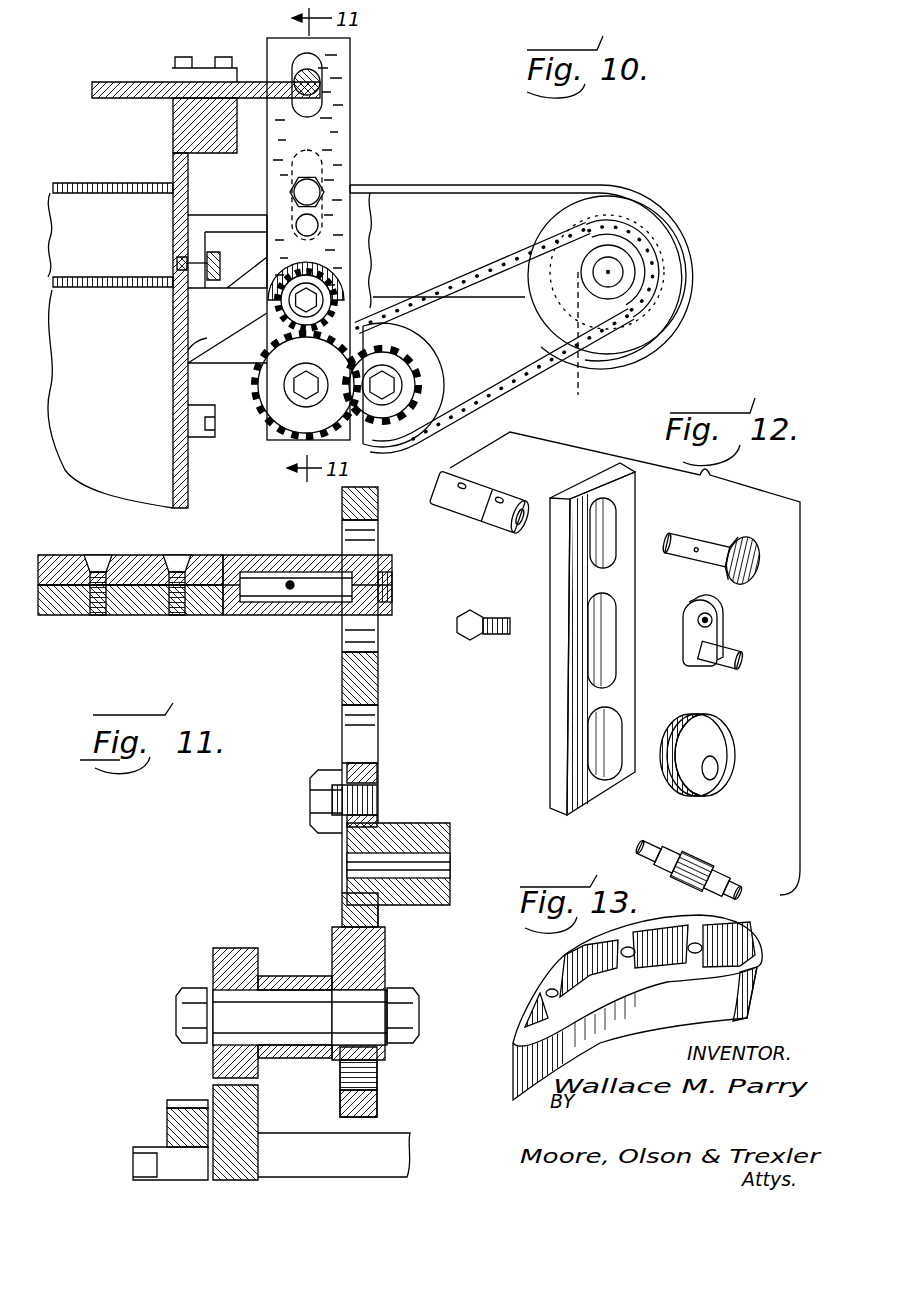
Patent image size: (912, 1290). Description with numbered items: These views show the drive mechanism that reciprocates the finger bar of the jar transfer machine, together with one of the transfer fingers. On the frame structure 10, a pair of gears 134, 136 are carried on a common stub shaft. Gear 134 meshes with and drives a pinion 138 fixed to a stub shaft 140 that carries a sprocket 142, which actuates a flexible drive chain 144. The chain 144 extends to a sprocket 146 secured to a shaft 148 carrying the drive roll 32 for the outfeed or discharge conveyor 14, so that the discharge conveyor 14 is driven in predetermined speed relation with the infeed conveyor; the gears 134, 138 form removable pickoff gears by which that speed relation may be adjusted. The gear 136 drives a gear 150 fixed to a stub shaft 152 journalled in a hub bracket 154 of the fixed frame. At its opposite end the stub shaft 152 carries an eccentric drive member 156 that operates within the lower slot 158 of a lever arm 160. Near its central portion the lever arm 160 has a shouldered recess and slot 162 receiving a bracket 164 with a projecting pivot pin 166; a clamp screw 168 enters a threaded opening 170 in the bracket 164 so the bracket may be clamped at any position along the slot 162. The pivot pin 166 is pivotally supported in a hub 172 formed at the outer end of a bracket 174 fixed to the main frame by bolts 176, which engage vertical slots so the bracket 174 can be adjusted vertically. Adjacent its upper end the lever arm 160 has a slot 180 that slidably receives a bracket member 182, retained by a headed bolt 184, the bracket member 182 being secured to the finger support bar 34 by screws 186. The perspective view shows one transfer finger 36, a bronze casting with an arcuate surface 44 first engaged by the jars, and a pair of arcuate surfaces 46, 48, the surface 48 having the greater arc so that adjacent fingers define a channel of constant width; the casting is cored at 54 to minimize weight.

In FIG. 10, the frame structure 10 is at (173, 397).
In FIG. 10, the outfeed or discharge conveyor 14 is at (507, 185).
In FIG. 10, the roll 32 is at (665, 232).
In FIG. 11, the finger support bar 34 is at (150, 607).
In FIG. 13, the transfer finger 36 is at (652, 1006).
In FIG. 13, the arcuate surface 44 is at (767, 937).
In FIG. 13, the arcuate surface 46 is at (533, 990).
In FIG. 13, the arcuate surface 48 is at (628, 1027).
In FIG. 13, the cored portion 54 is at (600, 972).
In FIG. 10, the gear 134 is at (292, 412).
In FIG. 11, the gear 134 is at (172, 1132).
In FIG. 10, the gear 136 is at (273, 350).
In FIG. 11, the gear 136 is at (245, 1112).
In FIG. 10, the pinion 138 is at (430, 337).
In FIG. 10, the stub shaft 140 is at (384, 388).
In FIG. 10, the sprocket 142 is at (470, 397).
In FIG. 10, the flexible drive chain 144 is at (522, 311).
In FIG. 10, the sprocket 146 is at (598, 340).
In FIG. 10, the shaft 148 is at (615, 272).
In FIG. 10, the gear 150 is at (330, 275).
In FIG. 11, the gear 150 is at (228, 958).
In FIG. 11, the stub shaft 152 is at (215, 1010).
In FIG. 12, the stub shaft 152 is at (693, 857).
In FIG. 10, the hub bracket 154 is at (173, 352).
In FIG. 11, the hub bracket 154 is at (295, 978).
In FIG. 11, the drive member 156 is at (370, 955).
In FIG. 12, the drive member 156 is at (715, 740).
In FIG. 11, the lower slot 158 is at (372, 1072).
In FIG. 12, the lower slot 158 is at (622, 715).
In FIG. 10, the lever arm 160 is at (340, 124).
In FIG. 11, the lever arm 160 is at (348, 680).
In FIG. 12, the lever arm 160 is at (562, 697).
In FIG. 11, the shouldered recess and slot 162 is at (367, 743).
In FIG. 12, the shouldered recess and slot 162 is at (617, 610).
In FIG. 11, the bracket 164 is at (378, 773).
In FIG. 12, the bracket 164 is at (732, 630).
In FIG. 11, the pivot pin 166 is at (448, 870).
In FIG. 12, the pivot pin 166 is at (735, 658).
In FIG. 10, the clamp screw 168 is at (312, 188).
In FIG. 11, the clamp screw 168 is at (322, 805).
In FIG. 12, the clamp screw 168 is at (467, 640).
In FIG. 12, the threaded opening 170 is at (710, 617).
In FIG. 10, the hub 172 is at (265, 218).
In FIG. 11, the hub 172 is at (412, 823).
In FIG. 10, the bracket 174 is at (233, 215).
In FIG. 10, the bolts 176 is at (220, 262).
In FIG. 11, the slot 180 is at (350, 538).
In FIG. 12, the slot 180 is at (607, 523).
In FIG. 11, the bracket member 182 is at (241, 562).
In FIG. 12, the bracket member 182 is at (498, 522).
In FIG. 11, the headed bolt 184 is at (263, 597).
In FIG. 12, the headed bolt 184 is at (703, 543).
In FIG. 11, the screws 186 is at (100, 553).